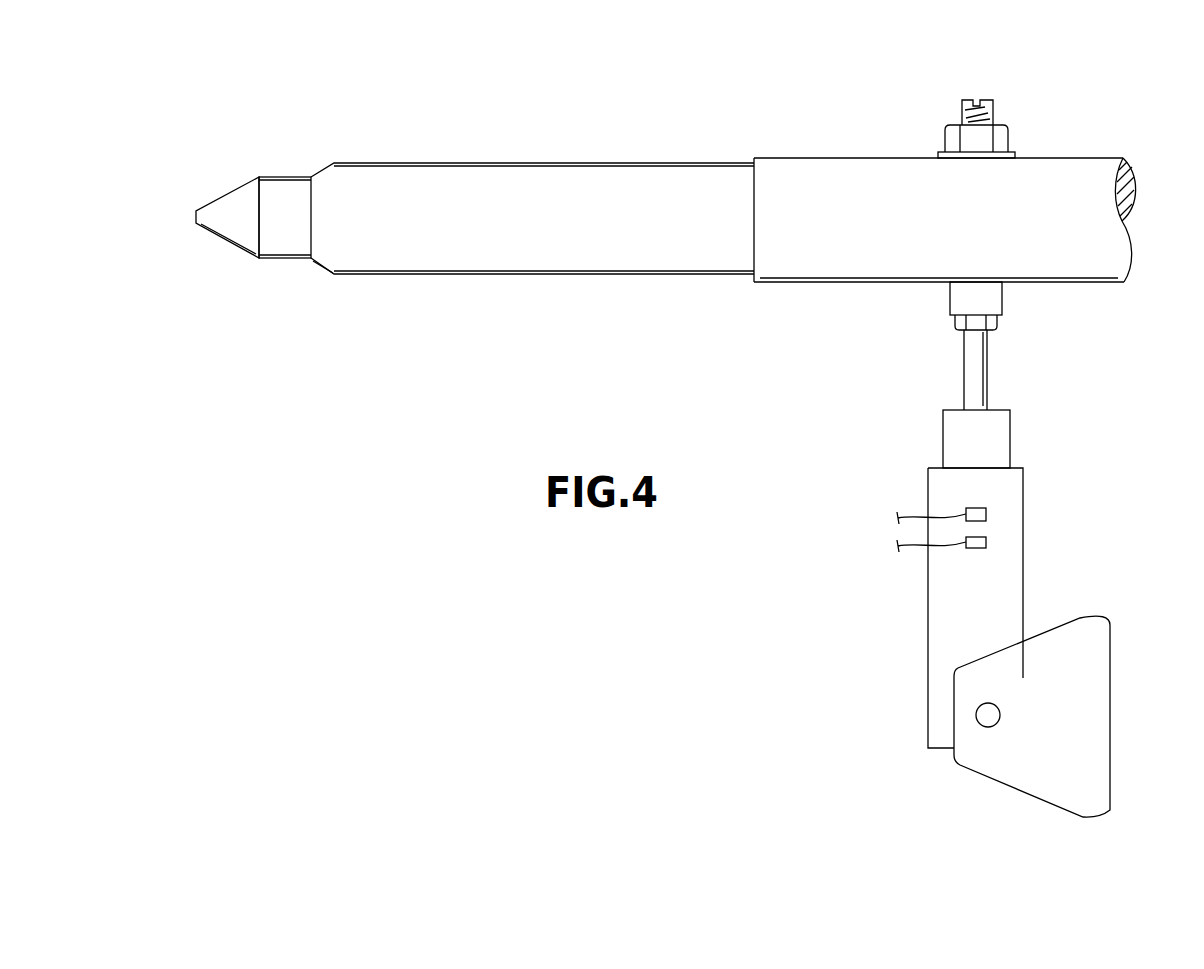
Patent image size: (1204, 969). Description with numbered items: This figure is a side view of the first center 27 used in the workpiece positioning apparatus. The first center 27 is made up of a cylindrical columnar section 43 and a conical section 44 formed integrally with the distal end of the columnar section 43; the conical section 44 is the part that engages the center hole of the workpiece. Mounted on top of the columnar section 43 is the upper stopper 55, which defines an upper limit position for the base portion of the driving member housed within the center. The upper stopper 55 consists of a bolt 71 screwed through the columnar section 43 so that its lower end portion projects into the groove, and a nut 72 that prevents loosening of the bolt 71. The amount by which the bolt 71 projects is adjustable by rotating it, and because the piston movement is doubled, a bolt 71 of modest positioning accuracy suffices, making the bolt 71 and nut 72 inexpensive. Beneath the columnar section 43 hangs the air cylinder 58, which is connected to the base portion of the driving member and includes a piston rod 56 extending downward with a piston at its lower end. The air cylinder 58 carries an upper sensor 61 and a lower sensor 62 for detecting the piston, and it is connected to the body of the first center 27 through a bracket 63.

The first center 27 is at (537, 152).
The cylindrical columnar section 43 is at (607, 183).
The conical section 44 is at (233, 205).
The upper stopper 55 is at (1061, 95).
The bolt 71 is at (995, 103).
The nut 72 is at (1005, 138).
The piston rod 56 is at (975, 378).
The air cylinder 58 is at (953, 628).
The upper sensor 61 is at (990, 513).
The lower sensor 62 is at (990, 541).
The bracket 63 is at (1020, 771).